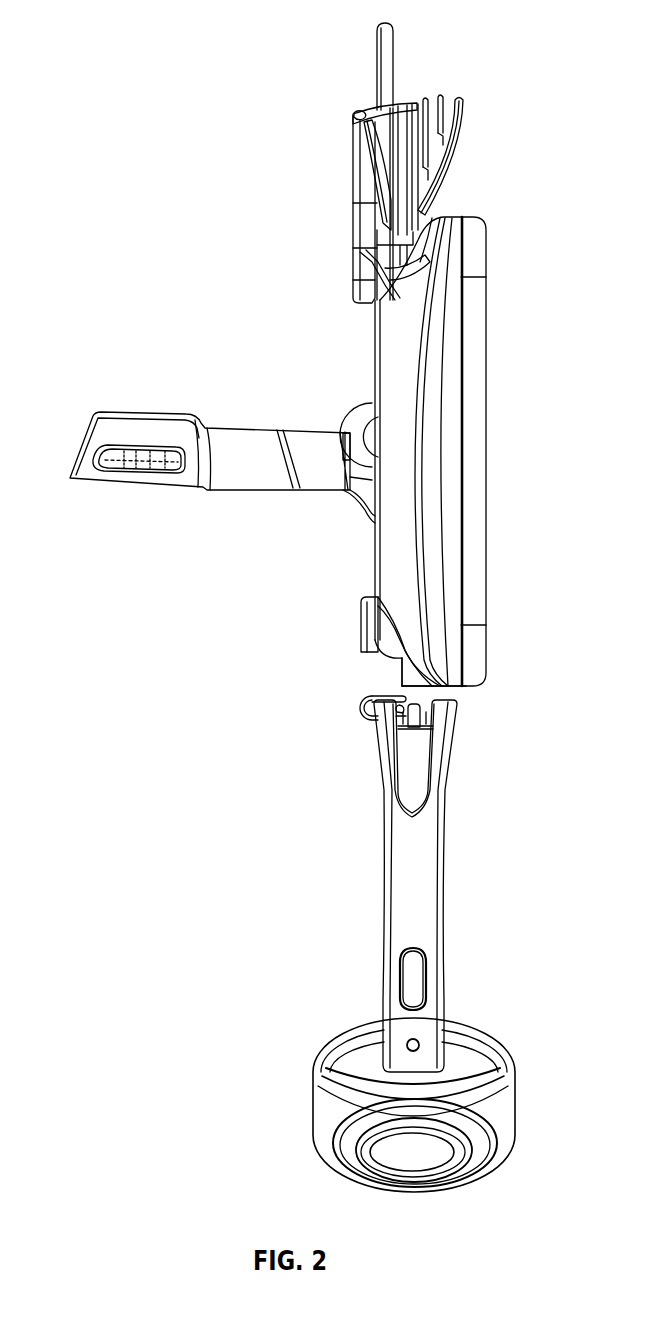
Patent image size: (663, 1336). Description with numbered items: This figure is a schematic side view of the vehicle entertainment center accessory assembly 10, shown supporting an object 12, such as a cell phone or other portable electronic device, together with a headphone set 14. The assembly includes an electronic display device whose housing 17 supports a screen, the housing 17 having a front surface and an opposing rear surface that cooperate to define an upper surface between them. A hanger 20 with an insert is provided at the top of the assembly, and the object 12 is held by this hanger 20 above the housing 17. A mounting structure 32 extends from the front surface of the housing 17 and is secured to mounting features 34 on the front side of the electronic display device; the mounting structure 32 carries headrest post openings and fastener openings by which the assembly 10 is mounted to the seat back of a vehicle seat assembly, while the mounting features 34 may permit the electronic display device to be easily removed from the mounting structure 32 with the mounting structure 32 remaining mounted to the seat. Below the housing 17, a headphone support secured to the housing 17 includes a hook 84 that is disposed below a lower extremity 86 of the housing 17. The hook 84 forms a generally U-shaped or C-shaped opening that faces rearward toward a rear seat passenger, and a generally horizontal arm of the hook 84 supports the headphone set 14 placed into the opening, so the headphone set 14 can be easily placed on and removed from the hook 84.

The vehicle entertainment center accessory assembly 10 is at (104, 38).
The object 12 is at (393, 56).
The headphone set 14 is at (430, 876).
The housing 17 is at (468, 411).
The hanger 20 is at (455, 146).
The mounting structure 32 is at (148, 412).
The mounting features 34 is at (358, 424).
The hook 84 is at (363, 713).
The lower extremity 86 is at (465, 686).